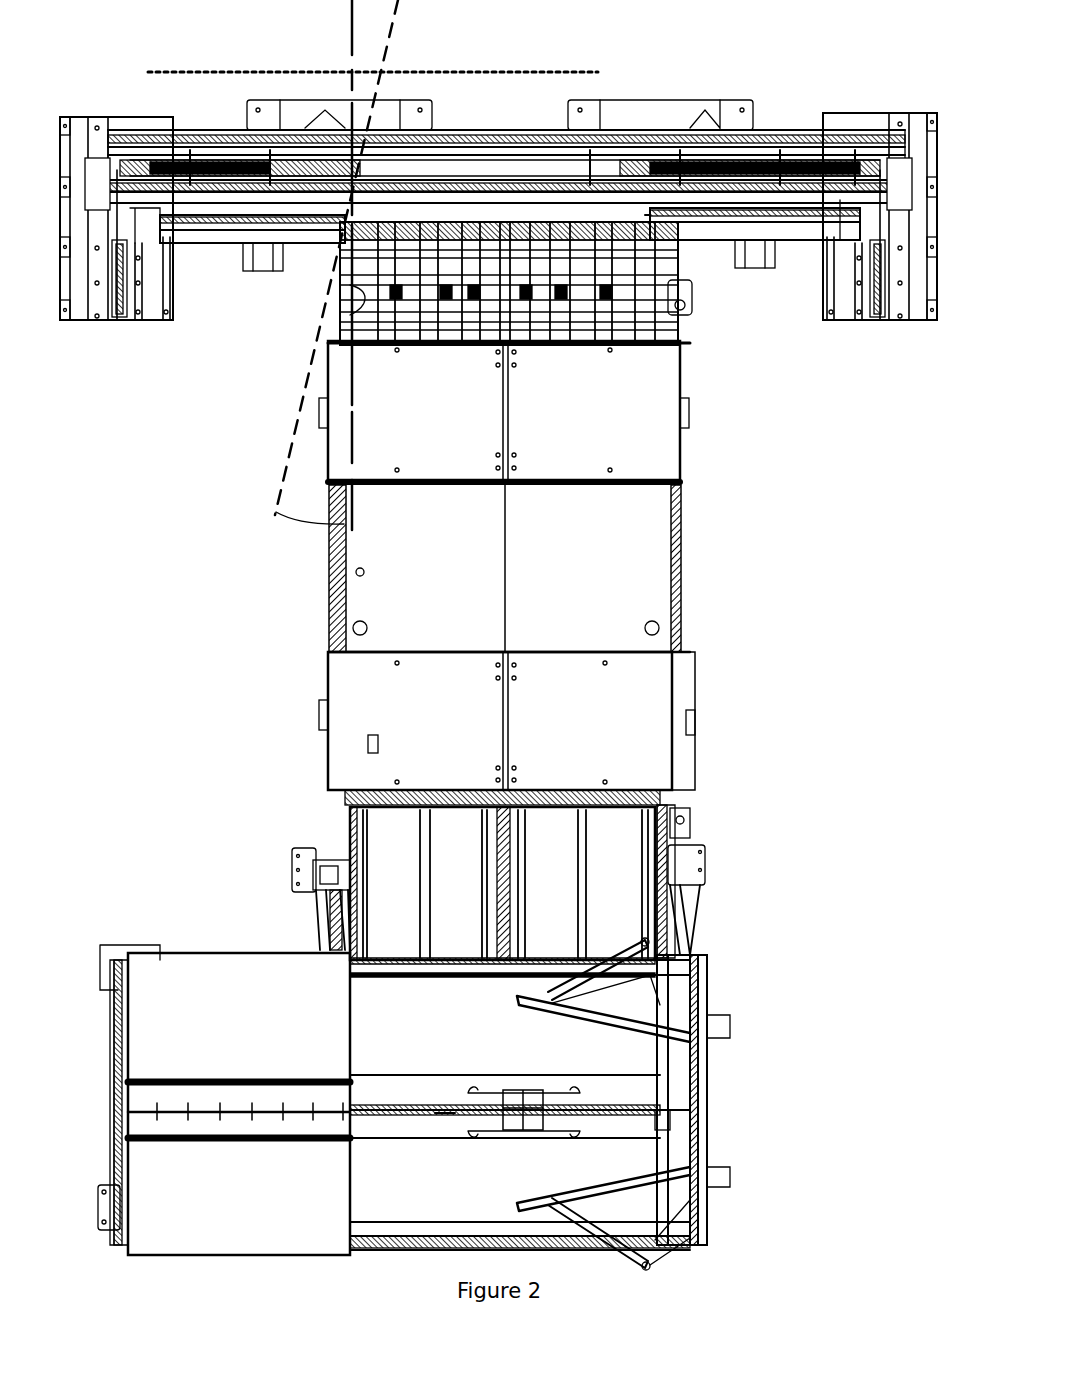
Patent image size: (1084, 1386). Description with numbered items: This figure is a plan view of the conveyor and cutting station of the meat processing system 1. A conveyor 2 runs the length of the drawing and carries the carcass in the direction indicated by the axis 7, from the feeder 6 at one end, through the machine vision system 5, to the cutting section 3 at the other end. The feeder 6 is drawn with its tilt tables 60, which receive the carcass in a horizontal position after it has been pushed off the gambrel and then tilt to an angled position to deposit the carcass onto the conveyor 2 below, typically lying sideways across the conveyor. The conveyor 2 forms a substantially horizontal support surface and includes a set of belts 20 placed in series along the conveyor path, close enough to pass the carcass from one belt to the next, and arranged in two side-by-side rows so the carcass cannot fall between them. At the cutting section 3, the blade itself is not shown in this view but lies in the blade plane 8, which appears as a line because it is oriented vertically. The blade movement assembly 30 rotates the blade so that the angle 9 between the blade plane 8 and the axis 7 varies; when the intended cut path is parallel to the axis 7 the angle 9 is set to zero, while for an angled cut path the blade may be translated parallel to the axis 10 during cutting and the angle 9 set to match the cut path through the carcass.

The meat processing system 1 is at (830, 496).
The conveyor 2 is at (345, 832).
The cutting section 3 is at (838, 285).
The machine vision system 5 is at (680, 595).
The feeder 6 is at (205, 953).
The axis 7 is at (350, 380).
The blade plane 8 is at (297, 415).
The angle 9 is at (304, 523).
The axis 10 is at (175, 72).
The belts 20 is at (628, 848).
The blade movement assembly 30 is at (230, 228).
The tilt tables 60 is at (640, 1055).